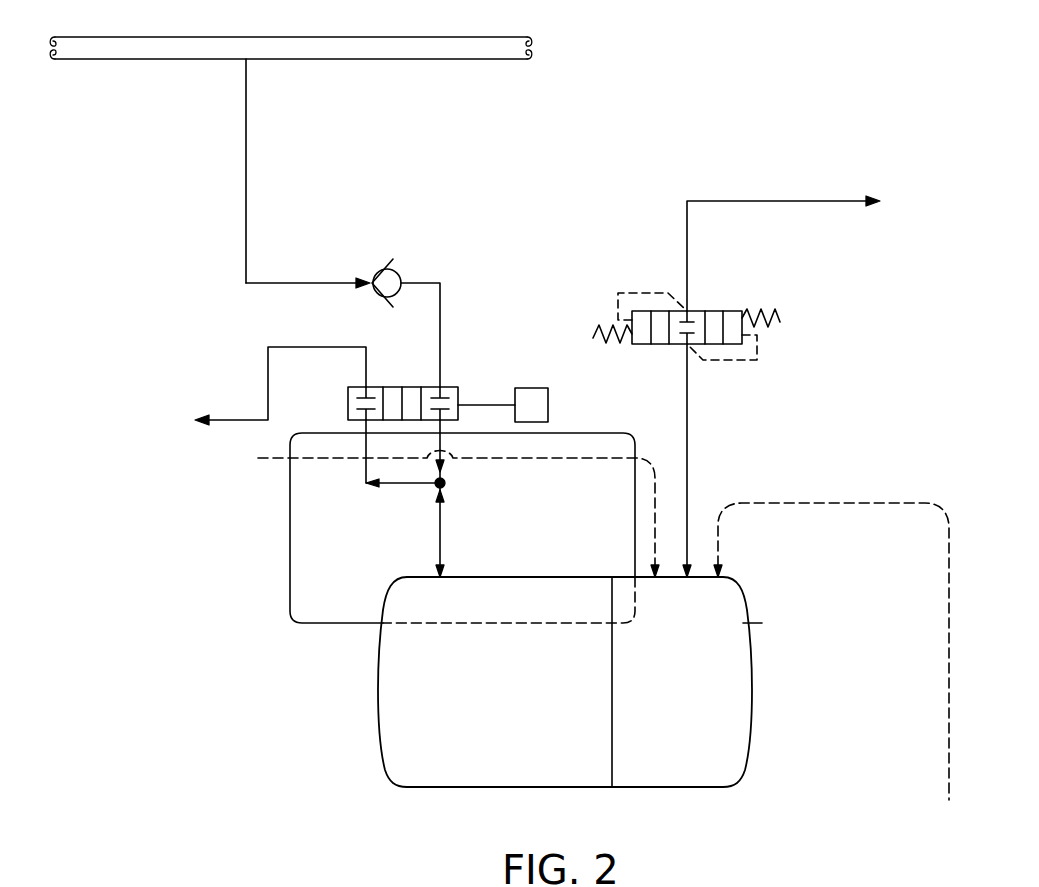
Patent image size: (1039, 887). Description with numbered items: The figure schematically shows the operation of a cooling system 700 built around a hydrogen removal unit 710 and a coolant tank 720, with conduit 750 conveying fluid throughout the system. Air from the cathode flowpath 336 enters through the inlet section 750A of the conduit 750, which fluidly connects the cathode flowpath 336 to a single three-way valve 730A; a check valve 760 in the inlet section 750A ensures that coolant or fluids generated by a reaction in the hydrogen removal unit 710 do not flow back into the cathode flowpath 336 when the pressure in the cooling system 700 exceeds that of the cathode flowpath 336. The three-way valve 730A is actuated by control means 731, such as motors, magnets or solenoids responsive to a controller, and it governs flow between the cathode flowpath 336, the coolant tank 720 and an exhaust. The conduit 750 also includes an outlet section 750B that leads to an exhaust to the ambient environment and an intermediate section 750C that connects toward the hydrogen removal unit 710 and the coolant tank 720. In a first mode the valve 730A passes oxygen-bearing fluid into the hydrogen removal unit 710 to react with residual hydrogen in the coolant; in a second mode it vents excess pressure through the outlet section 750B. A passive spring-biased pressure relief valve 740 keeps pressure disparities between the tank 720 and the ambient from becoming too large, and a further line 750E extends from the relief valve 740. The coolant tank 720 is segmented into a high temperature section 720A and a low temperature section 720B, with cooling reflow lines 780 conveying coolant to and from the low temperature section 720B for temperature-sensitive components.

The cooling system 700 is at (802, 66).
The cathode flowpath 336 is at (403, 60).
The conduit 750 is at (246, 162).
The inlet section 750A is at (246, 236).
The check valve 760 is at (330, 283).
The three-way valve 730A is at (390, 387).
The control means 731 is at (530, 388).
The outlet section 750B is at (225, 427).
The intermediate section 750C is at (441, 528).
The cooling reflow lines 780 is at (328, 459).
The hydrogen removal unit 710 is at (290, 580).
The coolant tank 720 is at (379, 684).
The high temperature section 720A is at (427, 787).
The low temperature section 720B is at (682, 787).
The pressure relief valve 740 is at (648, 311).
The outlet conduit 750E is at (832, 201).